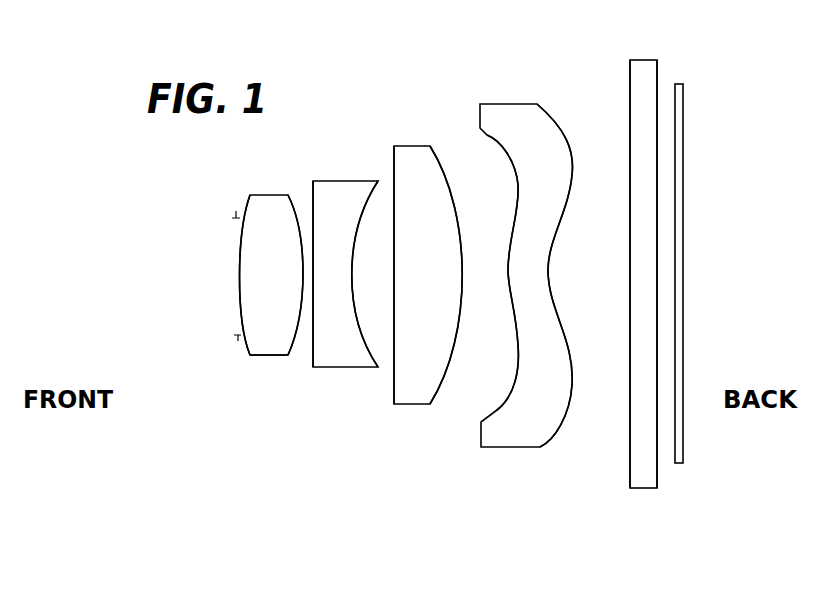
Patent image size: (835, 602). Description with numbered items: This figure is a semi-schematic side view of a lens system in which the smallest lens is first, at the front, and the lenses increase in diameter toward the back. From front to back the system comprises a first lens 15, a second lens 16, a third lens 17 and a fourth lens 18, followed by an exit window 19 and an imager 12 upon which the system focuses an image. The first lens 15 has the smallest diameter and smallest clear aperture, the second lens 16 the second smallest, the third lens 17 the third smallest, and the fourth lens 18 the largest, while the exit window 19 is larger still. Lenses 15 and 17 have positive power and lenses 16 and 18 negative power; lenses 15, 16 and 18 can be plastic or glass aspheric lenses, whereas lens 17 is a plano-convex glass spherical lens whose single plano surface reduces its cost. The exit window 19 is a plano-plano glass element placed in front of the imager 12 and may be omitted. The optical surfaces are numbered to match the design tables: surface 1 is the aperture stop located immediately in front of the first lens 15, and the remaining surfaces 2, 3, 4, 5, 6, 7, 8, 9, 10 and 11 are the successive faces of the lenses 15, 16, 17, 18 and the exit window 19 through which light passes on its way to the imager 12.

The aperture stop 1 is at (234, 338).
The surface 2 is at (256, 340).
The surface 3 is at (290, 336).
The surface 4 is at (312, 347).
The surface 5 is at (370, 345).
The surface 6 is at (395, 384).
The surface 7 is at (437, 393).
The surface 8 is at (497, 410).
The surface 9 is at (553, 430).
The surface 10 is at (633, 475).
The surface 11 is at (659, 467).
The imager 12 is at (678, 137).
The first lens 15 is at (268, 196).
The second lens 16 is at (338, 181).
The third lens 17 is at (410, 146).
The fourth lens 18 is at (510, 104).
The exit window 19 is at (643, 60).